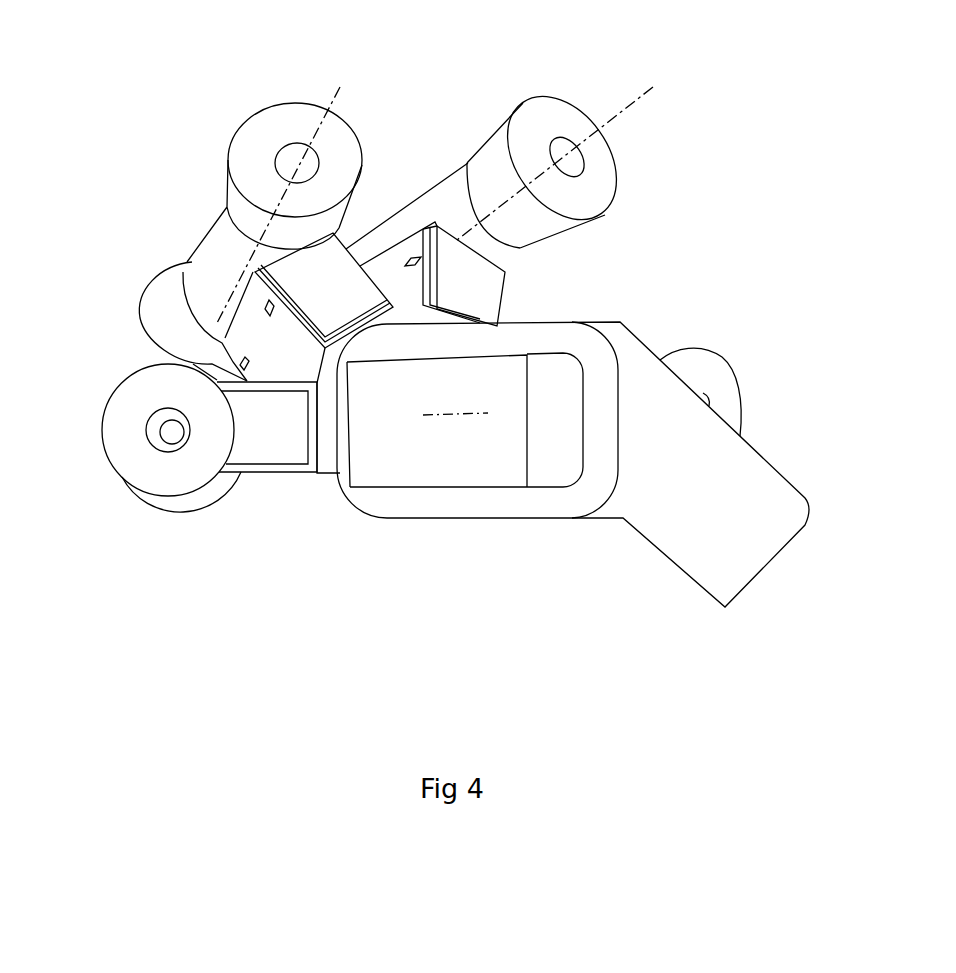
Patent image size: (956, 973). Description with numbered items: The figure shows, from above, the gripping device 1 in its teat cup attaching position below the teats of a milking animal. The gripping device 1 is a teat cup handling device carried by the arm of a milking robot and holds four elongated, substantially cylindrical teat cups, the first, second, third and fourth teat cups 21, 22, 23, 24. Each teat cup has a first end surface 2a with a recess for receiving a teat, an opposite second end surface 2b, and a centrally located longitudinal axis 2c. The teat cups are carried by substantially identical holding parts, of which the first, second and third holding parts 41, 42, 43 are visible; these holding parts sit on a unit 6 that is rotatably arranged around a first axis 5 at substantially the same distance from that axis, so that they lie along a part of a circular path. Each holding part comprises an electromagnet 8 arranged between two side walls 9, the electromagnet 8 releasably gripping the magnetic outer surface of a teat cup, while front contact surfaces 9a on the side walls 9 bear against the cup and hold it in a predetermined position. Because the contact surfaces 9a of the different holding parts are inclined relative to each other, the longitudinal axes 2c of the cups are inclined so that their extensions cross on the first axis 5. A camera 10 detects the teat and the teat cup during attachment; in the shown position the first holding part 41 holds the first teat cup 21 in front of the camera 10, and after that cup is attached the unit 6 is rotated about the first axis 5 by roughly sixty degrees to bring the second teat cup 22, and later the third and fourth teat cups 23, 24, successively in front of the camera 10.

The gripping device 1 is at (663, 198).
The first end surface 2a is at (288, 130).
The second end surface 2b is at (185, 312).
The longitudinal axis 2c is at (318, 133).
The first teat cup 21 is at (155, 500).
The second teat cup 22 is at (208, 262).
The third teat cup 23 is at (432, 200).
The fourth teat cup 24 is at (672, 358).
The first holding part 41 is at (273, 475).
The second holding part 42 is at (270, 335).
The third holding part 43 is at (388, 273).
The first axis 5 is at (440, 413).
The unit 6 is at (325, 473).
The electromagnet 8 is at (338, 275).
The side wall 9 is at (240, 475).
The front contact surface 9a is at (275, 273).
The camera 10 is at (393, 440).